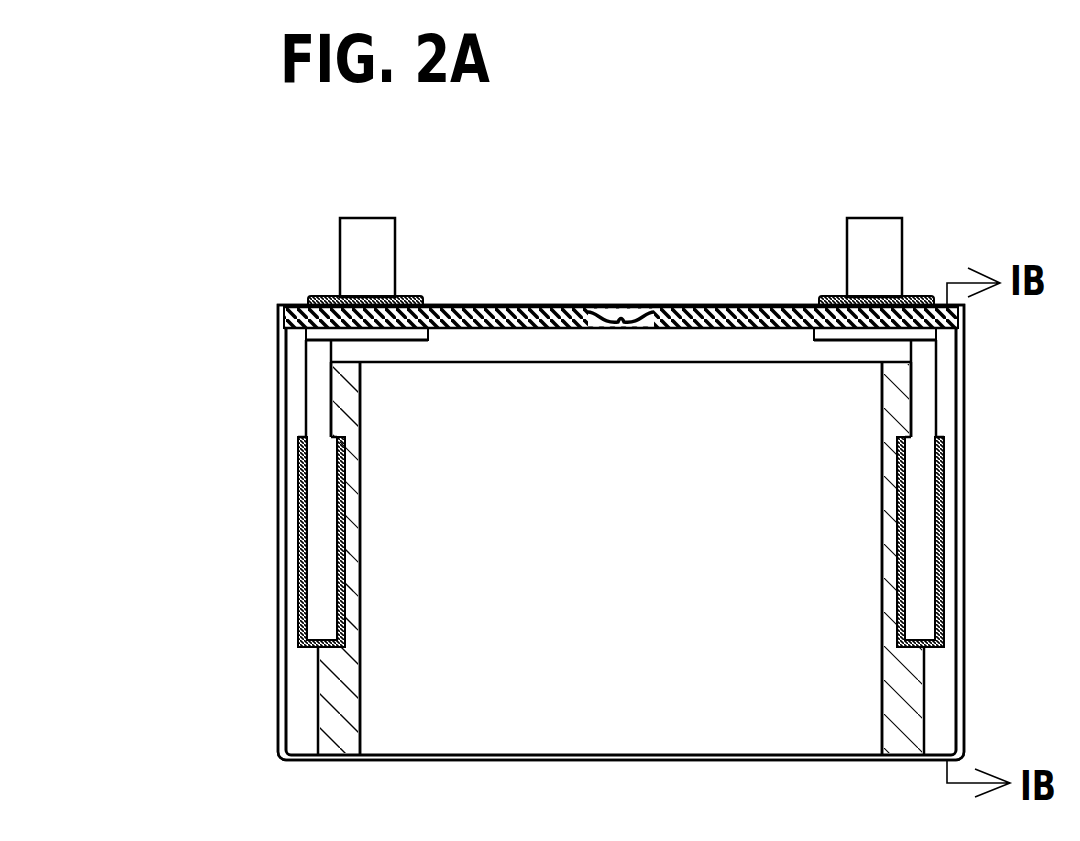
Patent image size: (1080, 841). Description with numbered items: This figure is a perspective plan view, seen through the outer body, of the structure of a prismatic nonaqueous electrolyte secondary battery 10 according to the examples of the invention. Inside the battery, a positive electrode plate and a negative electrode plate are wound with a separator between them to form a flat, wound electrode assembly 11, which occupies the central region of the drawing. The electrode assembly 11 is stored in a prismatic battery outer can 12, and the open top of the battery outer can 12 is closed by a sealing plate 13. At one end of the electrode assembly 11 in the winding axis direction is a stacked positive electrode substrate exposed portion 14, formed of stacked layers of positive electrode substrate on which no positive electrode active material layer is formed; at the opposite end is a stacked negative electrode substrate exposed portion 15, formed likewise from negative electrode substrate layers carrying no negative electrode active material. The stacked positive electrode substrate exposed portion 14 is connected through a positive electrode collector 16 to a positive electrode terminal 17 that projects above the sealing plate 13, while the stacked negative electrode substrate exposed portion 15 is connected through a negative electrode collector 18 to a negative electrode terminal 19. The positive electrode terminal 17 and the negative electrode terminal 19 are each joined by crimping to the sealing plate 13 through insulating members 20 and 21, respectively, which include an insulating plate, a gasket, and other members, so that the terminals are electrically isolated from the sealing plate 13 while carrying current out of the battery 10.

The prismatic nonaqueous electrolyte secondary battery 10 is at (198, 205).
The flat, wound electrode assembly 11 is at (778, 654).
The battery outer can 12 is at (280, 716).
The sealing plate 13 is at (668, 306).
The stacked positive electrode substrate exposed portion 14 is at (327, 687).
The stacked negative electrode substrate exposed portion 15 is at (925, 707).
The positive electrode collector 16 is at (315, 491).
The positive electrode terminal 17 is at (384, 234).
The negative electrode collector 18 is at (935, 616).
The negative electrode terminal 19 is at (858, 234).
The insulating member 20 is at (425, 300).
The insulating member 21 is at (820, 300).